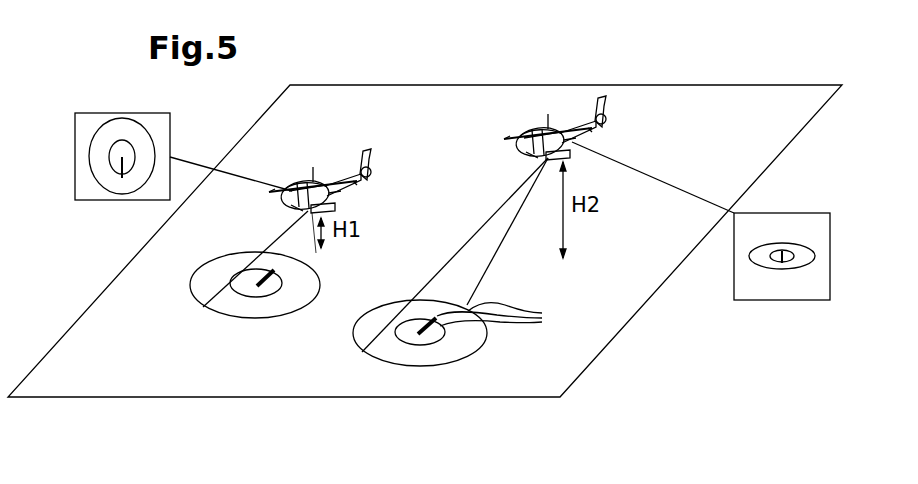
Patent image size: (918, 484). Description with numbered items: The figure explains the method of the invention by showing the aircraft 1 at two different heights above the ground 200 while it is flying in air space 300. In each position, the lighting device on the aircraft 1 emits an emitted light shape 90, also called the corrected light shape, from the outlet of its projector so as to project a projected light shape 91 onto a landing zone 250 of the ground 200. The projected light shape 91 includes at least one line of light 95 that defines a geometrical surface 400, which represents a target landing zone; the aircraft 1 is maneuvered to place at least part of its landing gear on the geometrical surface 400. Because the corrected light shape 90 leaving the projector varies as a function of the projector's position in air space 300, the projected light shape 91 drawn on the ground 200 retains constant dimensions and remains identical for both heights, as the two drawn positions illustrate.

The aircraft 1 is at (333, 198).
The emitted light shape 90 is at (97, 113).
The projected light shape 91 is at (190, 297).
The line of light 95 is at (506, 312).
The ground 200 is at (552, 367).
The landing zone 250 is at (203, 315).
The air space 300 is at (353, 124).
The geometrical surface 400 is at (410, 330).